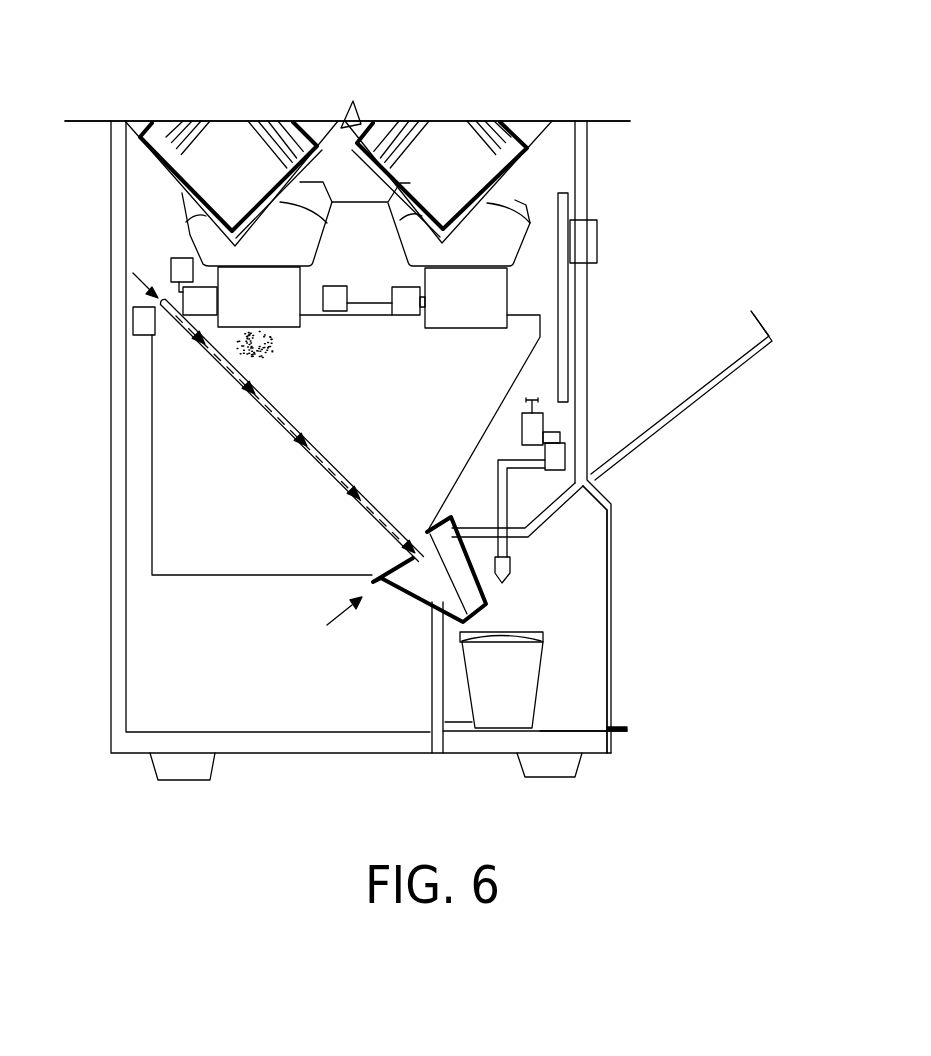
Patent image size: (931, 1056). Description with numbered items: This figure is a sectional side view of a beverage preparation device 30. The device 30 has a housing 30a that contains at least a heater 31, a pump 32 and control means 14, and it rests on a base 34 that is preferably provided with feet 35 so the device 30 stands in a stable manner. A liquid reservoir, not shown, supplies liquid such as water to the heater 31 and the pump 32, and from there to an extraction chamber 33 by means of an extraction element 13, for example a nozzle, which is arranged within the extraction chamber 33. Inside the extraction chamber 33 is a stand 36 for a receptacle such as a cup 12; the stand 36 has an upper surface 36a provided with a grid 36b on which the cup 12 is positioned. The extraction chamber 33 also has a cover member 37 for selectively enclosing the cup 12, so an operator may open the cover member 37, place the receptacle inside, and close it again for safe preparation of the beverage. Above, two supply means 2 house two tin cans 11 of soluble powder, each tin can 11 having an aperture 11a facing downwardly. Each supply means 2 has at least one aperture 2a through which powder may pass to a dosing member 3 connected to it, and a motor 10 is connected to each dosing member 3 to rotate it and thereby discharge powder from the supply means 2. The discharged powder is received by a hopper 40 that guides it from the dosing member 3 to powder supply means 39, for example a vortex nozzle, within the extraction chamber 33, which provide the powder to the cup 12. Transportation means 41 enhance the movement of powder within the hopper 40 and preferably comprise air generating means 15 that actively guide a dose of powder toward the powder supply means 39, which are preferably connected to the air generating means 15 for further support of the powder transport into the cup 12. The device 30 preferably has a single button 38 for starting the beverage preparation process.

The supply means 2 is at (182, 192).
The aperture 2a is at (283, 170).
The dosing member 3 is at (470, 293).
The motor 10 is at (405, 303).
The tin can 11 is at (220, 157).
The aperture 11a is at (277, 182).
The cup 12 is at (512, 695).
The extraction element 13 is at (502, 495).
The control means 14 is at (183, 270).
The air generating means 15 is at (147, 322).
The beverage preparation device 30 is at (615, 97).
The housing 30a is at (582, 190).
The heater 31 is at (533, 422).
The pump 32 is at (560, 453).
The extraction chamber 33 is at (582, 542).
The base 34 is at (137, 745).
The feet 35 is at (175, 770).
The stand 36 is at (533, 728).
The upper surface 36a is at (592, 729).
The grid 36b is at (590, 733).
The cover member 37 is at (715, 382).
The single button 38 is at (583, 243).
The powder supply means 39 is at (412, 597).
The hopper 40 is at (262, 407).
The transportation means 41 is at (280, 424).